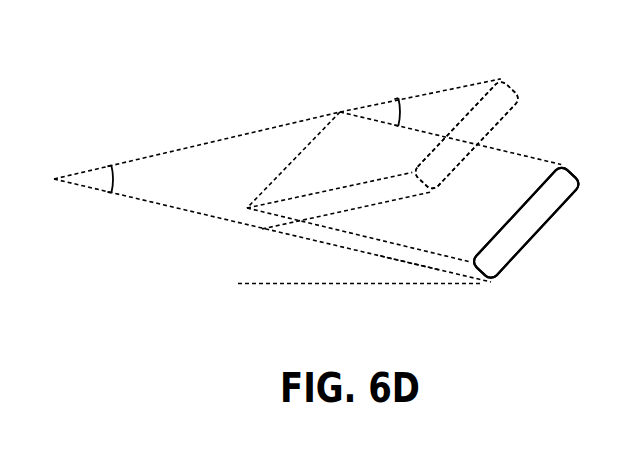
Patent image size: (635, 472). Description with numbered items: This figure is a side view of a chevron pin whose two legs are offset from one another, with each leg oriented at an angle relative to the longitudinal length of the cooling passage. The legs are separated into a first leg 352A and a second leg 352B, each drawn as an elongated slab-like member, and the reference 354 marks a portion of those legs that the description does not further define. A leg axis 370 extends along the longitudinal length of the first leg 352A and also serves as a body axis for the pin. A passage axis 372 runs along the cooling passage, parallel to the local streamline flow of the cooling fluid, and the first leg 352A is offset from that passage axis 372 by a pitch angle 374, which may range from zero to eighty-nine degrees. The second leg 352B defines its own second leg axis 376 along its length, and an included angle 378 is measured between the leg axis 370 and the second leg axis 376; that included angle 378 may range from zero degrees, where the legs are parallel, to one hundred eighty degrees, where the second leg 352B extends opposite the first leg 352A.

The first leg 352A is at (453, 233).
The second leg 352B is at (447, 110).
The panel surface 354 is at (490, 113).
The leg axis 370 is at (180, 210).
The passage axis 372 is at (293, 285).
The pitch angle 374 is at (397, 262).
The second leg axis 376 is at (247, 133).
The included angle 378 is at (117, 178).